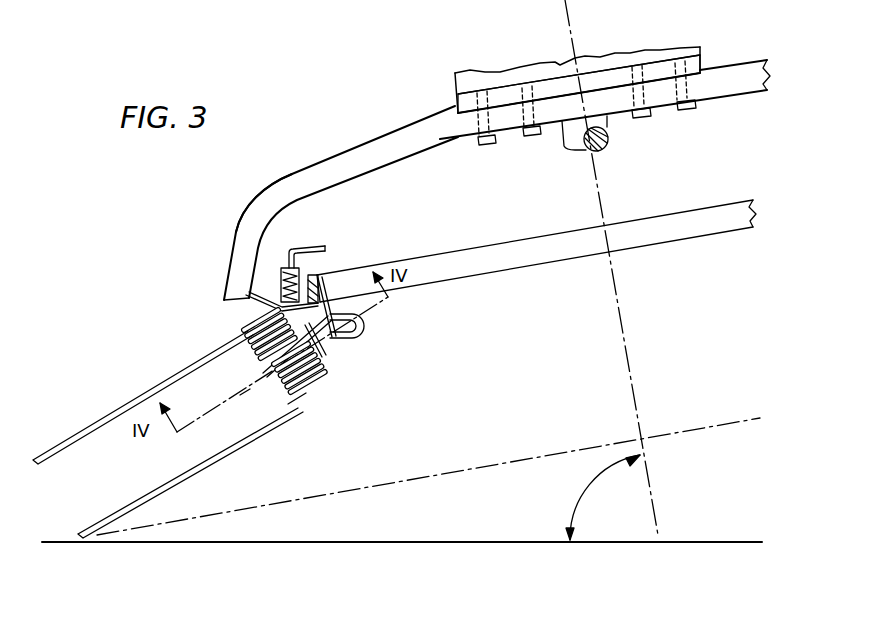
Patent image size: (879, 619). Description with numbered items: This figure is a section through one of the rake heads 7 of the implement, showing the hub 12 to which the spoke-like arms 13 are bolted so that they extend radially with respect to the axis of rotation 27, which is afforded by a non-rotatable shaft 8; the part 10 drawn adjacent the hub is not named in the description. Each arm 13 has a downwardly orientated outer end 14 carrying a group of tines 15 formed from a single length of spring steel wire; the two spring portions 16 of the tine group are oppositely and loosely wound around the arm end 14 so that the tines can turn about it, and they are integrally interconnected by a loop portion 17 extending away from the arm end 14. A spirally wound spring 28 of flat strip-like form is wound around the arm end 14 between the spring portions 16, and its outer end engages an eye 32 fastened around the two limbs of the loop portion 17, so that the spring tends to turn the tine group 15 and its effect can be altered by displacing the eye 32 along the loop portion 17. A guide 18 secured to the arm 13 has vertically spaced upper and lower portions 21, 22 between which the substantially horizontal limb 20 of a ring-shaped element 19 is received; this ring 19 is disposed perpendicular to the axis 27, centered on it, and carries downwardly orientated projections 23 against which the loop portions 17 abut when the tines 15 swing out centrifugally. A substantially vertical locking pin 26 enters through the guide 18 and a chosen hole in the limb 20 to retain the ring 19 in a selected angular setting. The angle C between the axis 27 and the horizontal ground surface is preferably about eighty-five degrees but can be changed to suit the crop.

The rake head 7 is at (240, 217).
The non-rotatable shaft 8 is at (611, 124).
The board 10 is at (455, 80).
The hub 12 is at (457, 104).
The spoke-like arm 13 is at (388, 167).
The arm end 14 is at (313, 407).
The group of tines 15 is at (110, 513).
The spring portion 16 is at (250, 347).
The loop portion 17 is at (362, 333).
The guide 18 is at (250, 297).
The ring-shaped element 19 is at (547, 268).
The substantially horizontal limb 20 is at (308, 273).
The upper portion 21 is at (280, 275).
The lower portion 22 is at (340, 307).
The downwardly orientated projection 23 is at (333, 350).
The locking pin 26 is at (325, 244).
The axis of rotation 27 is at (632, 360).
The spirally wound spring 28 is at (246, 388).
The eye 32 is at (328, 370).
The angle C is at (583, 497).